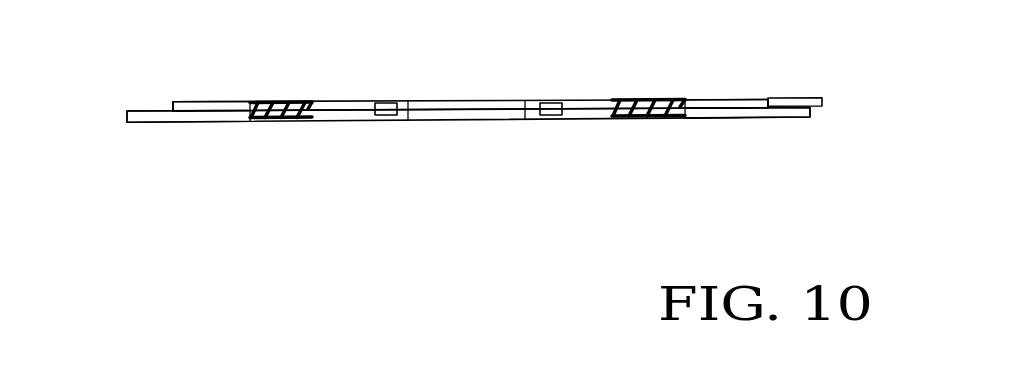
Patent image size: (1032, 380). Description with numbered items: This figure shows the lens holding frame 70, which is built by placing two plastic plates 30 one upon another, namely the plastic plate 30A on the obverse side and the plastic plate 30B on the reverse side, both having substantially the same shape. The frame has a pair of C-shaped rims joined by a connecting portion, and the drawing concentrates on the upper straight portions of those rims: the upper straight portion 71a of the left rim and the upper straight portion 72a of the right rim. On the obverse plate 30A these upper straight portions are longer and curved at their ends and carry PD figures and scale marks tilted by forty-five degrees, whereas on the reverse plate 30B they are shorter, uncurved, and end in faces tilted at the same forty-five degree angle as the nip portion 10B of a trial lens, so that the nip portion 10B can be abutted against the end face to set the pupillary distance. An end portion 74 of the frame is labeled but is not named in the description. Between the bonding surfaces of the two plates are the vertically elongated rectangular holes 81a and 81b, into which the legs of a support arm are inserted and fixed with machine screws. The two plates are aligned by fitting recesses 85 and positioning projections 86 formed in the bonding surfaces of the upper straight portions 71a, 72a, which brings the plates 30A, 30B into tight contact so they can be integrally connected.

The lens holding frame 70 is at (474, 122).
The upper straight portion of the right rim 72a is at (205, 102).
The upper straight portion of the left rim 71a is at (738, 97).
The end edge of cover layer 74 is at (173, 108).
The nip portion 10B is at (810, 97).
The rectangular hole 81a is at (552, 102).
The rectangular hole 81b is at (387, 102).
The fitting recesses 85 is at (467, 163).
The positioning projections 86 is at (282, 120).
The plastic plates 30 is at (702, 175).
The plastic plate on the obverse side 30A is at (693, 118).
The plastic plate on the reverse side 30B is at (730, 155).